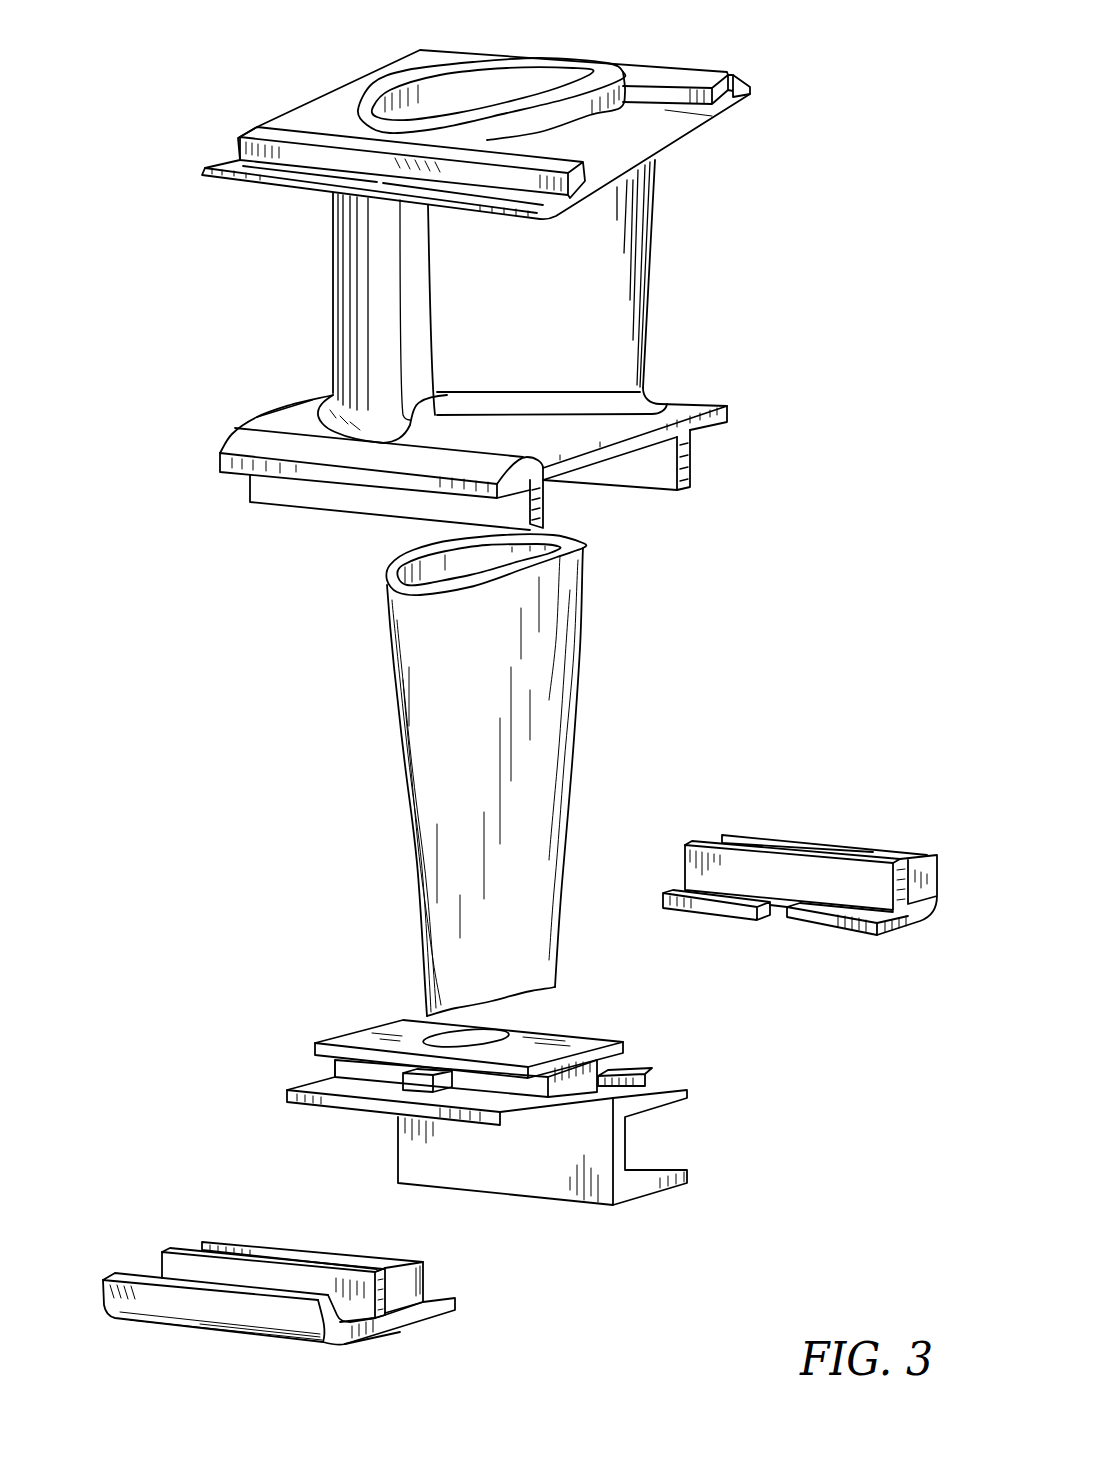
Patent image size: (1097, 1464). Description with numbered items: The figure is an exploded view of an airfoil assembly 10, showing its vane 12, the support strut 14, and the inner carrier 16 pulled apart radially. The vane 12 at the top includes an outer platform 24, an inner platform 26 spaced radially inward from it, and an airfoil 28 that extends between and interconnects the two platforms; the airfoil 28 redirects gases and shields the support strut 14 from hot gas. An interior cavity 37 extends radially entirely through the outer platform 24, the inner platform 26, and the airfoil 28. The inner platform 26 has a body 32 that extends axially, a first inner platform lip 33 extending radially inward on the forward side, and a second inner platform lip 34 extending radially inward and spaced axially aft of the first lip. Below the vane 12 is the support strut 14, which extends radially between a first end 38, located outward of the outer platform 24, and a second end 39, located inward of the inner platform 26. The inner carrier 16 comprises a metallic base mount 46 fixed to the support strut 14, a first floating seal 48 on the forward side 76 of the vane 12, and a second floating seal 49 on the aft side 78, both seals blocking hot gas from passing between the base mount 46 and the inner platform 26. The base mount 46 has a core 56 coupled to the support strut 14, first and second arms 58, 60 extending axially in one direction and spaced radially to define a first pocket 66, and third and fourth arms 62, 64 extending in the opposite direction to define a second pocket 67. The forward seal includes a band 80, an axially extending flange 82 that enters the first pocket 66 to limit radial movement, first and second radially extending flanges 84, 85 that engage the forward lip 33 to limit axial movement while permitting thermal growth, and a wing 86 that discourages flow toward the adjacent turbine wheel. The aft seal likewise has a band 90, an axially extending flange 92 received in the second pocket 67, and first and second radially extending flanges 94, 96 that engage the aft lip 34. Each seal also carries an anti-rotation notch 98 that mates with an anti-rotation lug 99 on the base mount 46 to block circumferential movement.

The airfoil assembly 10 is at (128, 117).
The vane 12 is at (733, 173).
The support strut 14 is at (592, 720).
The inner carrier 16 is at (772, 812).
The outer platform 24 is at (690, 66).
The inner platform 26 is at (727, 381).
The airfoil 28 is at (672, 258).
The body 32 is at (661, 402).
The first inner platform lip 33 is at (545, 508).
The second inner platform lip 34 is at (703, 465).
The interior cavity 37 is at (425, 100).
The first end 38 is at (385, 567).
The second end 39 is at (545, 988).
The base mount 46 is at (243, 1005).
The first floating seal 48 is at (165, 1242).
The second floating seal 49 is at (912, 790).
The core 56 is at (396, 1026).
The first arm 58 is at (310, 1040).
The second arm 60 is at (310, 1100).
The third arm 62 is at (618, 1030).
The fourth arm 64 is at (692, 1084).
The first pocket 66 is at (325, 1070).
The second pocket 67 is at (622, 1058).
The forward side 76 is at (327, 320).
The aft side 78 is at (656, 238).
The band 80 is at (400, 1336).
The axially extending flange 82 is at (468, 1303).
The first radially extending flange 84 is at (420, 1260).
The second radially extending flange 85 is at (348, 1266).
The wing 86 is at (160, 1311).
The band 90 is at (918, 937).
The axially extending flange 92 is at (853, 937).
The first radially extending flange 94 is at (850, 850).
The second radially extending flange 96 is at (938, 843).
The anti-rotation notch 98 is at (773, 935).
The anti-rotation lug 99 is at (378, 1072).